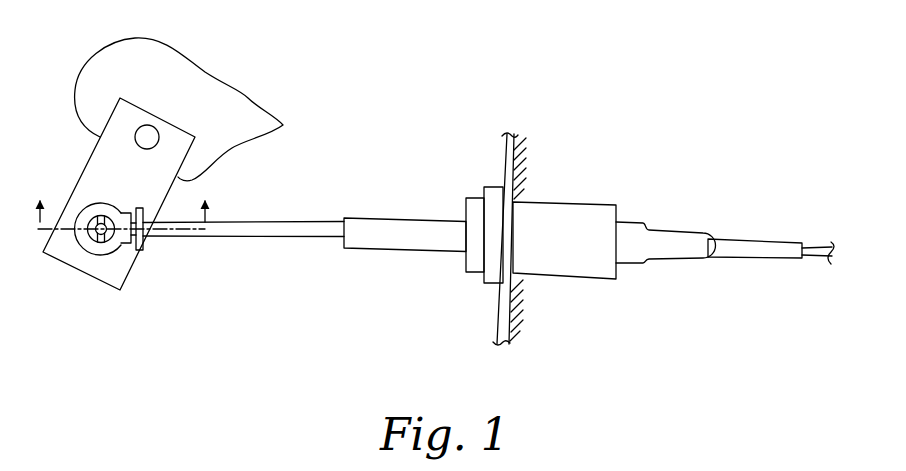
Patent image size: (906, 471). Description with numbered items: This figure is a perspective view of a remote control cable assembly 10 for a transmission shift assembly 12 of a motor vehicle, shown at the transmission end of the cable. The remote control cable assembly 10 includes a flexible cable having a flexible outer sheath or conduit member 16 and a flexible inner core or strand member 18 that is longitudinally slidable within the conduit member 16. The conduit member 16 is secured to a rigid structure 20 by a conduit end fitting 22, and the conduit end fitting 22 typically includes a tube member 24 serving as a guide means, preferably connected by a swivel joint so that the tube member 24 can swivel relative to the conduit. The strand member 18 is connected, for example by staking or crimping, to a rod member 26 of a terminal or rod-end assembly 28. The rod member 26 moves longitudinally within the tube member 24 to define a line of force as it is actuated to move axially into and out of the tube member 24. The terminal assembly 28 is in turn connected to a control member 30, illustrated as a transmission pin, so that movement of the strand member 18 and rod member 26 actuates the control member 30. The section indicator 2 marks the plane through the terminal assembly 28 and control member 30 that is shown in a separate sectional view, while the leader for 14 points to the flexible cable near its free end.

The remote control cable assembly 10 is at (660, 158).
The transmission shift assembly 12 is at (253, 98).
The shaft 14 is at (765, 236).
The conduit member 16 is at (745, 260).
The strand member 18 is at (813, 258).
The rigid structure 20 is at (505, 148).
The conduit end fitting 22 is at (590, 285).
The tube member 24 is at (430, 252).
The rod member 26 is at (256, 237).
The terminal assembly 28 is at (98, 266).
The control member 30 is at (111, 240).
The section line 2- 2 is at (124, 199).